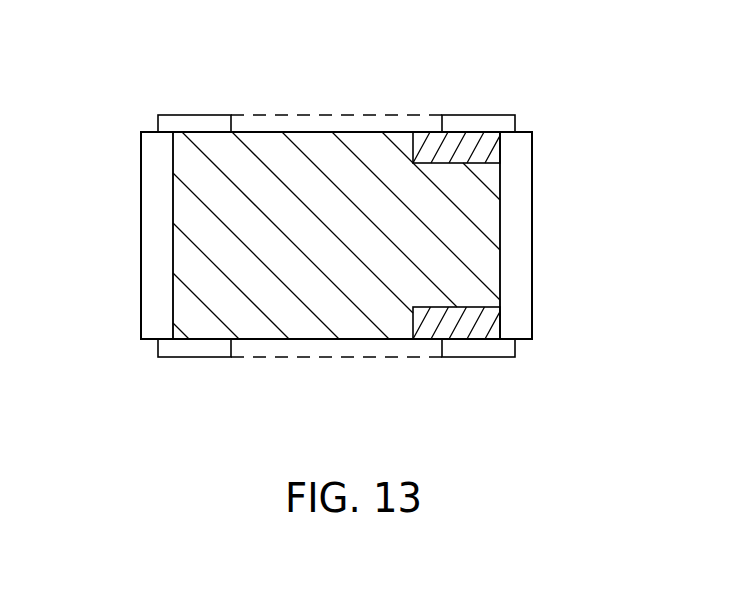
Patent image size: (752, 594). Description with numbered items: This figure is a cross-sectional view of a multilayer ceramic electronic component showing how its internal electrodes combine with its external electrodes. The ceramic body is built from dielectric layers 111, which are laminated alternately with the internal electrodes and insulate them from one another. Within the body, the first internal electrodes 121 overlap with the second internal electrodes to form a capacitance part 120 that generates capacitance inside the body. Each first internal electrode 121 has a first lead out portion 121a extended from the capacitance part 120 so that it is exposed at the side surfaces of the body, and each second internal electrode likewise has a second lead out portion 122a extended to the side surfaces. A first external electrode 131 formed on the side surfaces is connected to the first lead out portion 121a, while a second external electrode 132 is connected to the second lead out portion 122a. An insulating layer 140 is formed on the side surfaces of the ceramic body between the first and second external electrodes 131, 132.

The dielectric layer 111 is at (513, 153).
The capacitance part 120 is at (500, 245).
The first internal electrode 121 is at (188, 232).
The first lead out portion 121a is at (190, 318).
The second lead out portion 122a is at (487, 322).
The first external electrode 131 is at (193, 122).
The second external electrode 132 is at (476, 122).
The insulating layer 140 is at (312, 124).